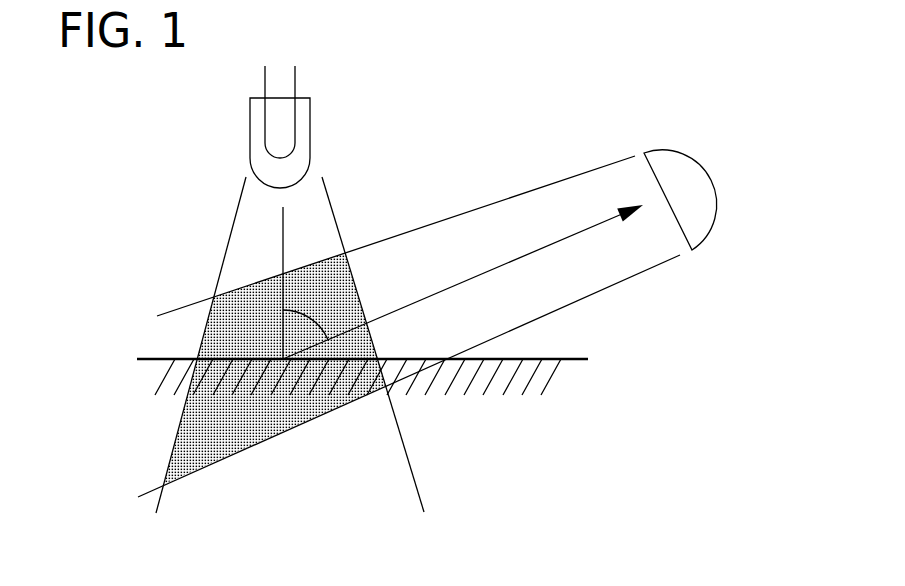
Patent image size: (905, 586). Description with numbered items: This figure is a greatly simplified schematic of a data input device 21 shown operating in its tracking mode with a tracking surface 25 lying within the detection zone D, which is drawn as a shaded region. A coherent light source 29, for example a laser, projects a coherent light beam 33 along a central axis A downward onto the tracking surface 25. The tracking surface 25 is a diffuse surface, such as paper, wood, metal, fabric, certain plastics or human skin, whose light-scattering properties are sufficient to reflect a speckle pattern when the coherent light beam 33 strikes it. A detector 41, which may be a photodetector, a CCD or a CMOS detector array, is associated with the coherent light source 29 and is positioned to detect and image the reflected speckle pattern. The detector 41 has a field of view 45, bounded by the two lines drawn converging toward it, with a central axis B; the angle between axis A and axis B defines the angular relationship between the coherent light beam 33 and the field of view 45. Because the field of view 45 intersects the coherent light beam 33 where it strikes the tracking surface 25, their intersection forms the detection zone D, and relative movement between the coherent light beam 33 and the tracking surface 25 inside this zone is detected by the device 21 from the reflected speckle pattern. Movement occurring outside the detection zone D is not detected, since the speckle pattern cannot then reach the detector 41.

The data input device 21 is at (483, 88).
The coherent light source 29 is at (310, 139).
The coherent light beam 33 is at (237, 211).
The central axis of the coherent light beam A is at (282, 219).
The central axis of the field of view B is at (549, 246).
The field of view 45 is at (562, 180).
The detector 41 is at (712, 167).
The tracking surface 25 is at (577, 357).
The detection zone D is at (213, 419).